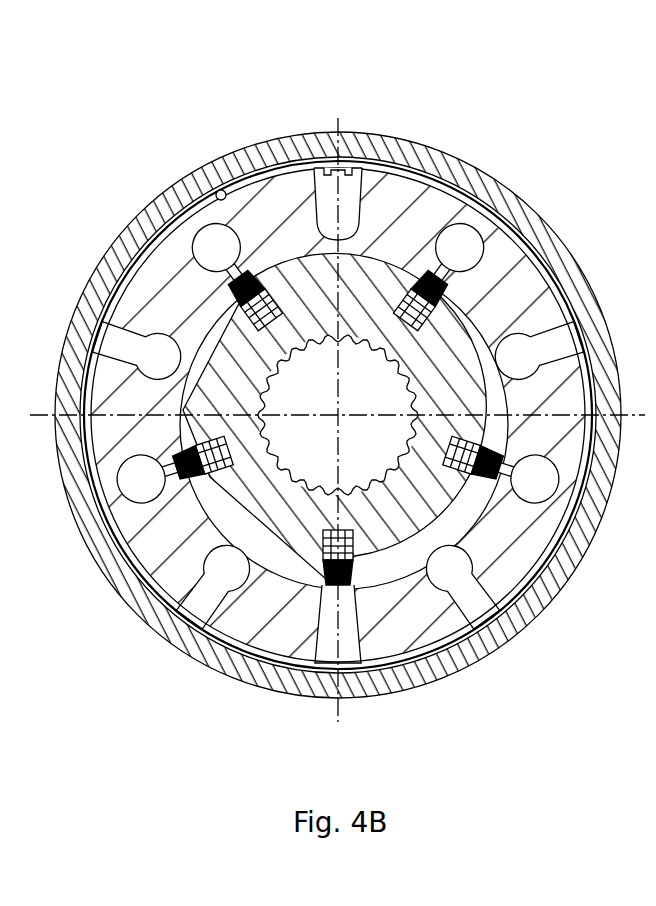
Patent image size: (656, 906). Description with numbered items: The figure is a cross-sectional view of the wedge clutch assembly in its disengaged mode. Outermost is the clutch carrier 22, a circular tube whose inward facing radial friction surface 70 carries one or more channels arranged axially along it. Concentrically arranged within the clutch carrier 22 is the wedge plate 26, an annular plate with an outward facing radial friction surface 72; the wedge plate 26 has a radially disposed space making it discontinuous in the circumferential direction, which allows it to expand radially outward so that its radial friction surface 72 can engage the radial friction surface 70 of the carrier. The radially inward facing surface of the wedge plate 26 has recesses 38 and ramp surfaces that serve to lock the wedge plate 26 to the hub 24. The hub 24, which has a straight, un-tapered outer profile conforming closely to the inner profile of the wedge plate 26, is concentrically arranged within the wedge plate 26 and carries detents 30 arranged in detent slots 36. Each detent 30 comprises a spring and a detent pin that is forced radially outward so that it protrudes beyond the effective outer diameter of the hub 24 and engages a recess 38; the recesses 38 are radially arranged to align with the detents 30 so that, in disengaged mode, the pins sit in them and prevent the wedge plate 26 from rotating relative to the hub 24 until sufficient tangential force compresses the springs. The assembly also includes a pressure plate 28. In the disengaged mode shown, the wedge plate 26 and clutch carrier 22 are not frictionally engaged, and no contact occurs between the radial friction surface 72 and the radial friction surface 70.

The inward facing radial friction surface 70 is at (262, 168).
The outward facing radial friction surface 72 is at (216, 190).
The clutch carrier 22 is at (314, 166).
The pressure plate 28 is at (348, 190).
The wedge plate 26 is at (411, 188).
The hub 24 is at (457, 497).
The detent slots 36 is at (465, 438).
The detents 30 is at (483, 447).
The recesses 38 is at (503, 472).